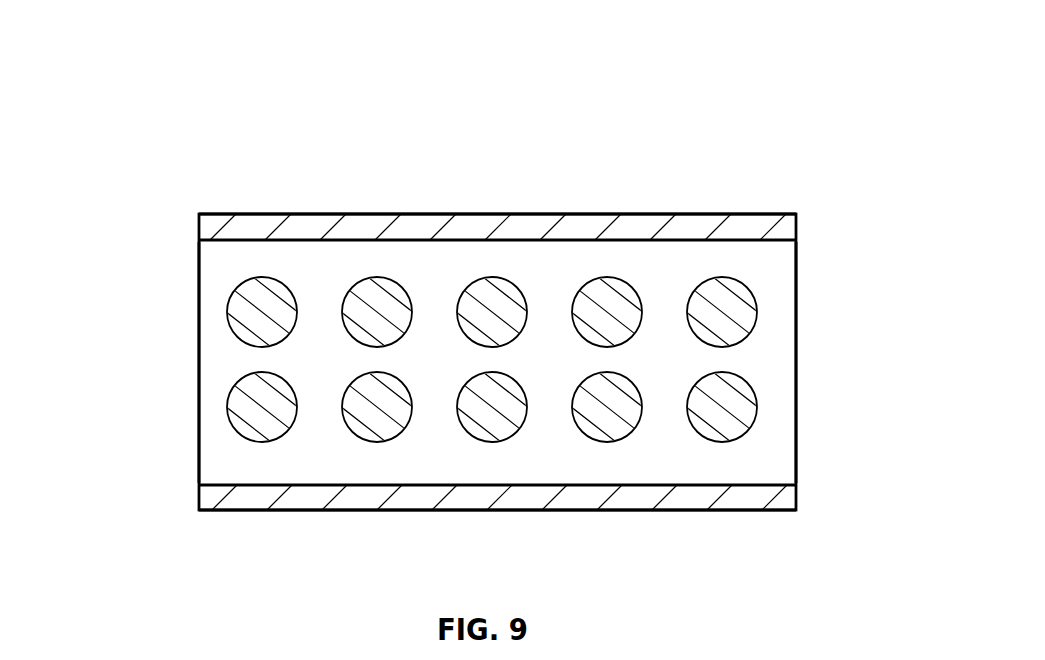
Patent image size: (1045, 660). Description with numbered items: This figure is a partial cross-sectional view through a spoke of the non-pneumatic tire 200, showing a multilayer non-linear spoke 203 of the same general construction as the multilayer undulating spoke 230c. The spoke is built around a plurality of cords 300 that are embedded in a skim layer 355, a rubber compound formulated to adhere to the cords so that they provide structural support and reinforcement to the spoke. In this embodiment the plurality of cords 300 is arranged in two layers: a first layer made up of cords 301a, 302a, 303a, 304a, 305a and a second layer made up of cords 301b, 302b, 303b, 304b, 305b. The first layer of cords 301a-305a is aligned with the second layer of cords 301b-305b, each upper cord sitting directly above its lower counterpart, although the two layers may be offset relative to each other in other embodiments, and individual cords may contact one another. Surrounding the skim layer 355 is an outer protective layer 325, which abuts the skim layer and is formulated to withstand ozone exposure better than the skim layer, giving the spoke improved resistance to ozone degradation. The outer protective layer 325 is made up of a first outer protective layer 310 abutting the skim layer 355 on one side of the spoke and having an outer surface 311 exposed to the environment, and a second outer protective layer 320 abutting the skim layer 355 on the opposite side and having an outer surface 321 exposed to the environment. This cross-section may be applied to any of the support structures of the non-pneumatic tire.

The non-pneumatic tire 200 is at (150, 132).
The non-linear spoke 203 is at (853, 365).
The multilayer undulating spoke 230c is at (147, 175).
The plurality of cords 300 is at (220, 362).
The first outer protective layer 310 is at (247, 221).
The outer surface 311 is at (261, 214).
The second outer protective layer 320 is at (248, 497).
The outer surface 321 is at (256, 511).
The outer protective layer 325 is at (397, 157).
The skim layer 355 is at (217, 273).
The cord 301a is at (263, 293).
The cord 302a is at (378, 292).
The cord 303a is at (492, 292).
The cord 304a is at (608, 291).
The cord 305a is at (710, 288).
The cord 301b is at (272, 407).
The cord 302b is at (385, 402).
The cord 303b is at (497, 402).
The cord 304b is at (608, 398).
The cord 305b is at (728, 402).